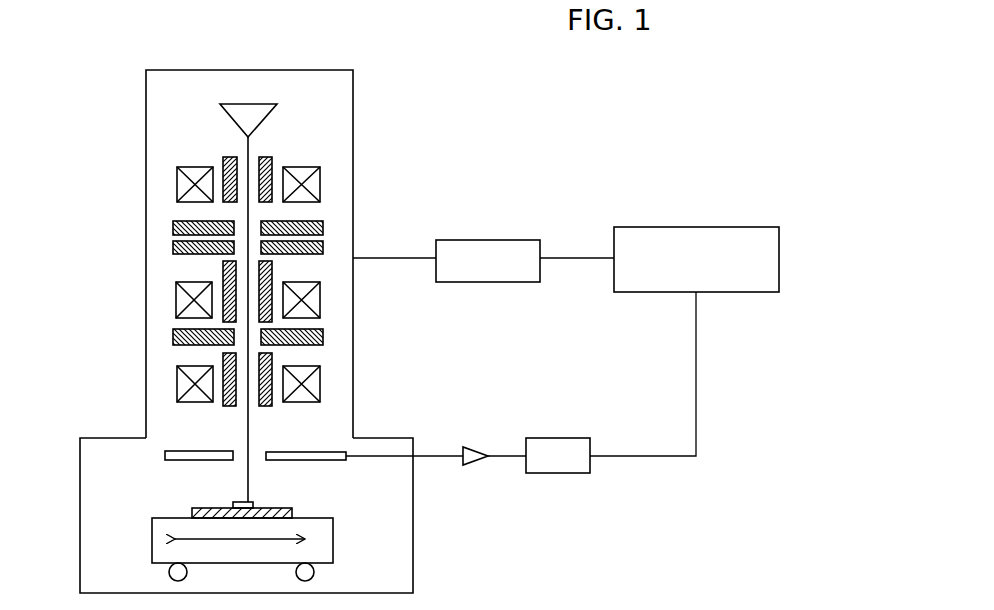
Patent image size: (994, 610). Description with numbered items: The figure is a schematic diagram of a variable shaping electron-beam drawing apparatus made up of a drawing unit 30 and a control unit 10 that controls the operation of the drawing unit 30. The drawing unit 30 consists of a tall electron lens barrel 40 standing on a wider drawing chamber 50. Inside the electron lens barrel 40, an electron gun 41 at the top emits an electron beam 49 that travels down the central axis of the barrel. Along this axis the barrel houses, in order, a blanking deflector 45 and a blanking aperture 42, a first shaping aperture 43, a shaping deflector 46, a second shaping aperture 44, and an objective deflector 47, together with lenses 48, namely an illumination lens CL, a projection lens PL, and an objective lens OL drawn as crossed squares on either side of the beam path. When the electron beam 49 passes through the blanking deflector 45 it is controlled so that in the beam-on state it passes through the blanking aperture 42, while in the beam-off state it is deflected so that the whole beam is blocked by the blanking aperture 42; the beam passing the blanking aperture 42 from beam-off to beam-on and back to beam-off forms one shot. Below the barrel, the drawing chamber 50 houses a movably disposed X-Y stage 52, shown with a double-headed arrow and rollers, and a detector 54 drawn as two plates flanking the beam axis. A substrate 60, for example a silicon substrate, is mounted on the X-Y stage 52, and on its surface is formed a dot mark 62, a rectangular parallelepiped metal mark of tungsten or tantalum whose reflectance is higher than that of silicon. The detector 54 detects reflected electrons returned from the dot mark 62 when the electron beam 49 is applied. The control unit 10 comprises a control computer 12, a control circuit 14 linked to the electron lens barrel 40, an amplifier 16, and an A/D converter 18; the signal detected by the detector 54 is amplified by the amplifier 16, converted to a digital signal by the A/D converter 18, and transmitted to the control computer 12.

The control unit 10 is at (370, 19).
The drawing unit 30 is at (346, 53).
The electron lens barrel 40 is at (180, 70).
The drawing chamber 50 is at (80, 539).
The electron gun 41 is at (222, 112).
The electron beam 49 is at (246, 146).
The lenses 48 is at (177, 185).
The blanking deflector 45 is at (225, 202).
The shaping deflector 46 is at (223, 268).
The objective deflector 47 is at (223, 358).
The blanking aperture 42 is at (173, 228).
The first shaping aperture 43 is at (173, 248).
The second shaping aperture 44 is at (173, 337).
The detector 54 is at (165, 455).
The dot mark 62 is at (235, 504).
The substrate 60 is at (292, 513).
The X-Y stage 52 is at (333, 540).
The control circuit 14 is at (500, 240).
The control computer 12 is at (727, 227).
The amplifier 16 is at (476, 467).
The A/D converter 18 is at (565, 475).